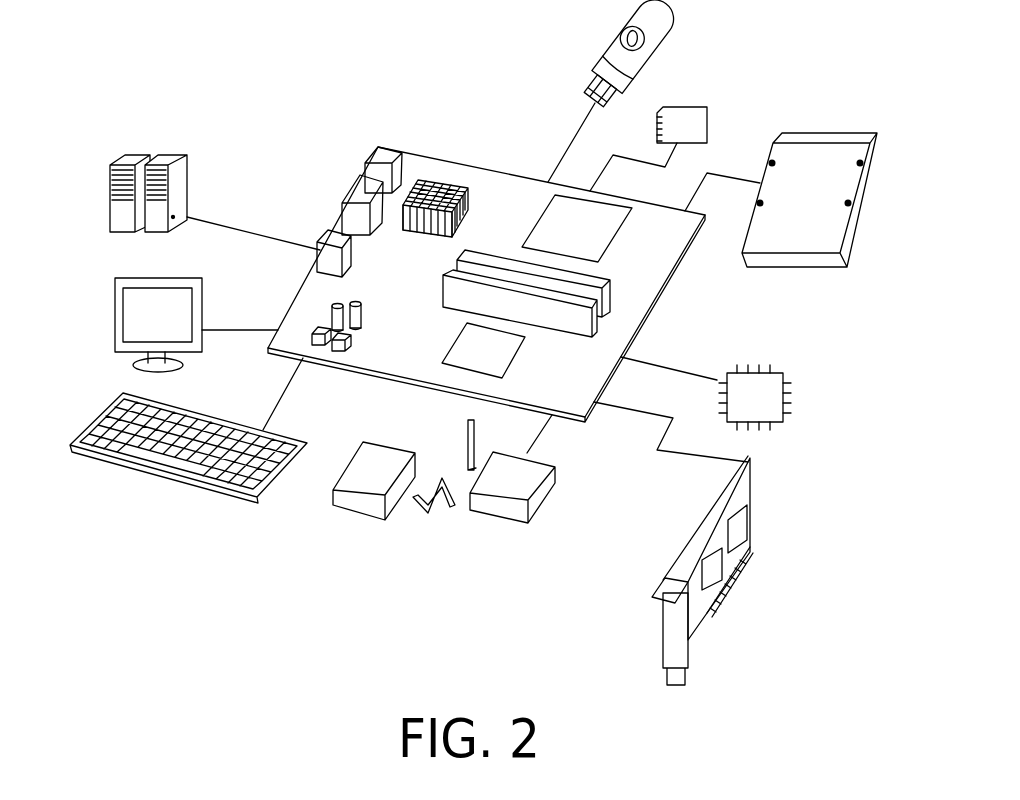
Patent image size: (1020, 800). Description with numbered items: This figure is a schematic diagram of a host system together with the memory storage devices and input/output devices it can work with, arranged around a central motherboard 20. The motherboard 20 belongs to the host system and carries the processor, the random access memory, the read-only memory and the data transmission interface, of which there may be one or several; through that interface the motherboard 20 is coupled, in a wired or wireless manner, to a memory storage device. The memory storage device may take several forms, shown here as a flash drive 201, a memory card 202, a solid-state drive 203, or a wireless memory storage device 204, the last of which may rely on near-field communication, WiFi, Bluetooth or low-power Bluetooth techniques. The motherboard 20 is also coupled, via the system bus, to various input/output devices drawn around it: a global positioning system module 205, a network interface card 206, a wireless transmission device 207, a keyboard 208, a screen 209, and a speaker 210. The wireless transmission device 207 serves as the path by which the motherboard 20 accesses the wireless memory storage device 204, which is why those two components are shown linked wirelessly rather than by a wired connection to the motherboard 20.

The motherboard 20 is at (492, 190).
The flash drive 201 is at (612, 45).
The memory card 202 is at (708, 113).
The solid-state drive 203 is at (828, 132).
The wireless memory storage device 204 is at (347, 457).
The global positioning system module 205 is at (791, 395).
The network interface card 206 is at (755, 517).
The wireless transmission device 207 is at (556, 497).
The keyboard 208 is at (192, 485).
The screen 209 is at (115, 333).
The speaker 210 is at (110, 216).